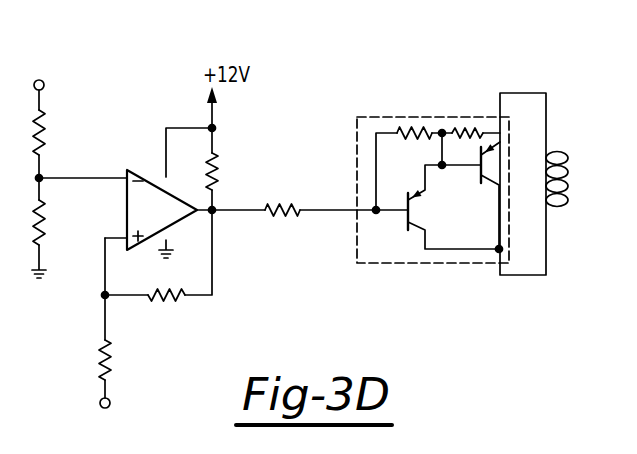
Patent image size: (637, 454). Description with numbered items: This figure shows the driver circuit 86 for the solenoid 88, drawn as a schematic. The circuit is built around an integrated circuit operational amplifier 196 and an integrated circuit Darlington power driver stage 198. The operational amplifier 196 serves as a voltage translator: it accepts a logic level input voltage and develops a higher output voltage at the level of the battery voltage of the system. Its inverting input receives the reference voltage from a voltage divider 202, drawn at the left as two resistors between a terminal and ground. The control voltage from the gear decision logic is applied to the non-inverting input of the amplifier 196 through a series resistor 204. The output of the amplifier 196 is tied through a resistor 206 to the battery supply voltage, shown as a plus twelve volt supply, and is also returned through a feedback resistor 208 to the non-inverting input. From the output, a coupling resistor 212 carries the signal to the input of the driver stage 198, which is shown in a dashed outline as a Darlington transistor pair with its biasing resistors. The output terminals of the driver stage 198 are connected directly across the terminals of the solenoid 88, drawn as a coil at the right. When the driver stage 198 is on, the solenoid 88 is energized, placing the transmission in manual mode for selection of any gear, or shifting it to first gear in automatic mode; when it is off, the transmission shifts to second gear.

The driver circuit 86 is at (148, 75).
The voltage divider 202 is at (56, 165).
The operational amplifier 196 is at (137, 170).
The resistor 206 is at (215, 165).
The coupling resistor 212 is at (276, 205).
The feedback resistor 208 is at (170, 302).
The series resistor 204 is at (108, 358).
The Darlington power driver stage 198 is at (436, 114).
The solenoid 88 is at (598, 118).